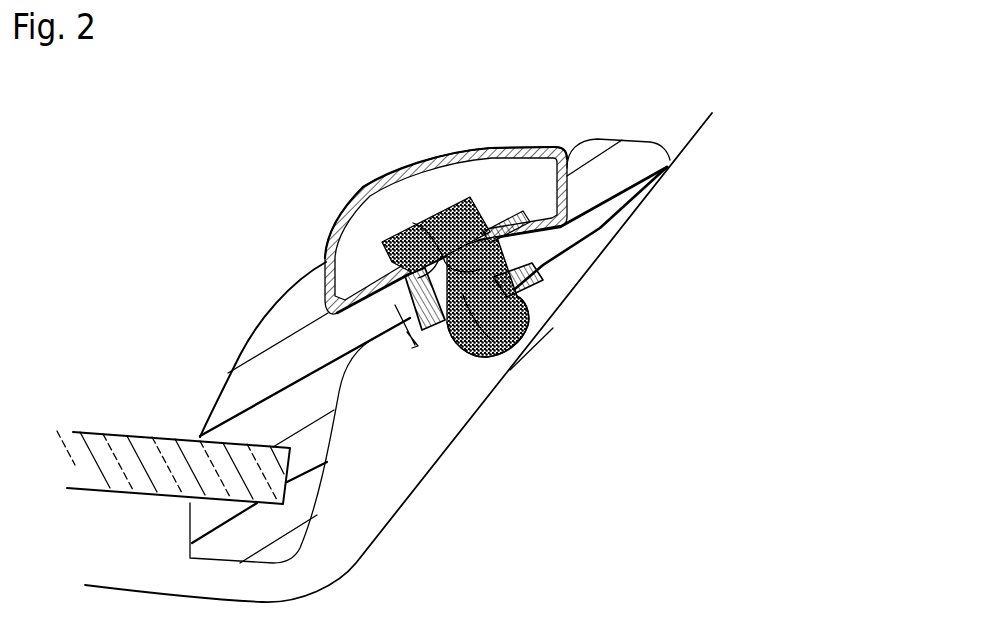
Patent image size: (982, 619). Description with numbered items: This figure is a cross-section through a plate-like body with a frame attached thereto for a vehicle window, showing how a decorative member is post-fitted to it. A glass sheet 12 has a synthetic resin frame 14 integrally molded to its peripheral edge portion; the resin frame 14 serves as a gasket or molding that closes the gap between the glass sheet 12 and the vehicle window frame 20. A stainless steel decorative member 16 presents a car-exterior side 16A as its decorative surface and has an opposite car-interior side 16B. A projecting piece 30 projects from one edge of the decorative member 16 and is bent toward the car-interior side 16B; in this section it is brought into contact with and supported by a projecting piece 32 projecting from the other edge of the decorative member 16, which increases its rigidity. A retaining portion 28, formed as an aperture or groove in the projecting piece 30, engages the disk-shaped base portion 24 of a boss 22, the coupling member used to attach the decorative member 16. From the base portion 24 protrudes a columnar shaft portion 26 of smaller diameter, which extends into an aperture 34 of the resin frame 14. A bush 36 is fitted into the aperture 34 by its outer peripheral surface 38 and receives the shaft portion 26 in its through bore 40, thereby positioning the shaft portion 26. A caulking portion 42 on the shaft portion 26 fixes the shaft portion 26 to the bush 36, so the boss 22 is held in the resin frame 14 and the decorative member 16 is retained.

The glass sheet 12 is at (97, 433).
The resin frame 14 is at (267, 336).
The decorative member 16 is at (440, 147).
The car-exterior side 16A is at (392, 173).
The car-interior side 16B is at (356, 224).
The window frame 20 is at (692, 138).
The boss 22 is at (485, 194).
The base portion 24 is at (442, 217).
The shaft portion 26 is at (510, 337).
The retaining portion 28 is at (448, 352).
The projecting piece 30 is at (511, 215).
The projecting piece 32 is at (552, 233).
The aperture 34 is at (498, 302).
The bush 36 is at (426, 332).
The outer peripheral surface 38 is at (392, 303).
The through bore 40 is at (413, 223).
The caulking portion 42 is at (530, 368).